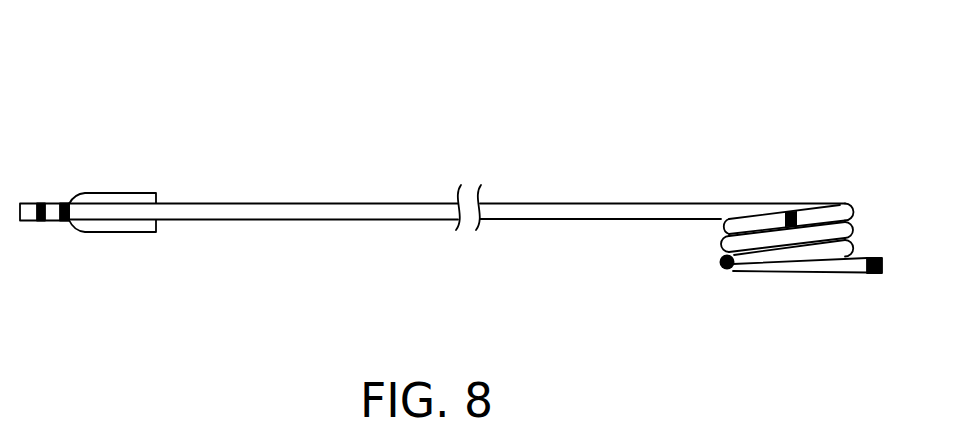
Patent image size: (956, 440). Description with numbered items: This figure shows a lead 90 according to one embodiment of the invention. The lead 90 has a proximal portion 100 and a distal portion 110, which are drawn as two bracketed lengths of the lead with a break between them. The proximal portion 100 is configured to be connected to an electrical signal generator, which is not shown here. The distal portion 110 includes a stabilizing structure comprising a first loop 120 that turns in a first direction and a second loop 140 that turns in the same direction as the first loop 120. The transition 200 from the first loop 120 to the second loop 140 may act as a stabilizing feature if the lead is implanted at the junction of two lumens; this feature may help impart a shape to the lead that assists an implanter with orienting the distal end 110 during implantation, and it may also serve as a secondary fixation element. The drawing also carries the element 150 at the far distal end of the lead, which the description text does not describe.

The lead 90 is at (484, 100).
The proximal portion 100 is at (459, 279).
The distal portion 110 is at (703, 246).
The first loop 120 is at (815, 213).
The second loop 140 is at (843, 246).
The distal tip electrode 150 is at (883, 266).
The transition 200 is at (703, 268).